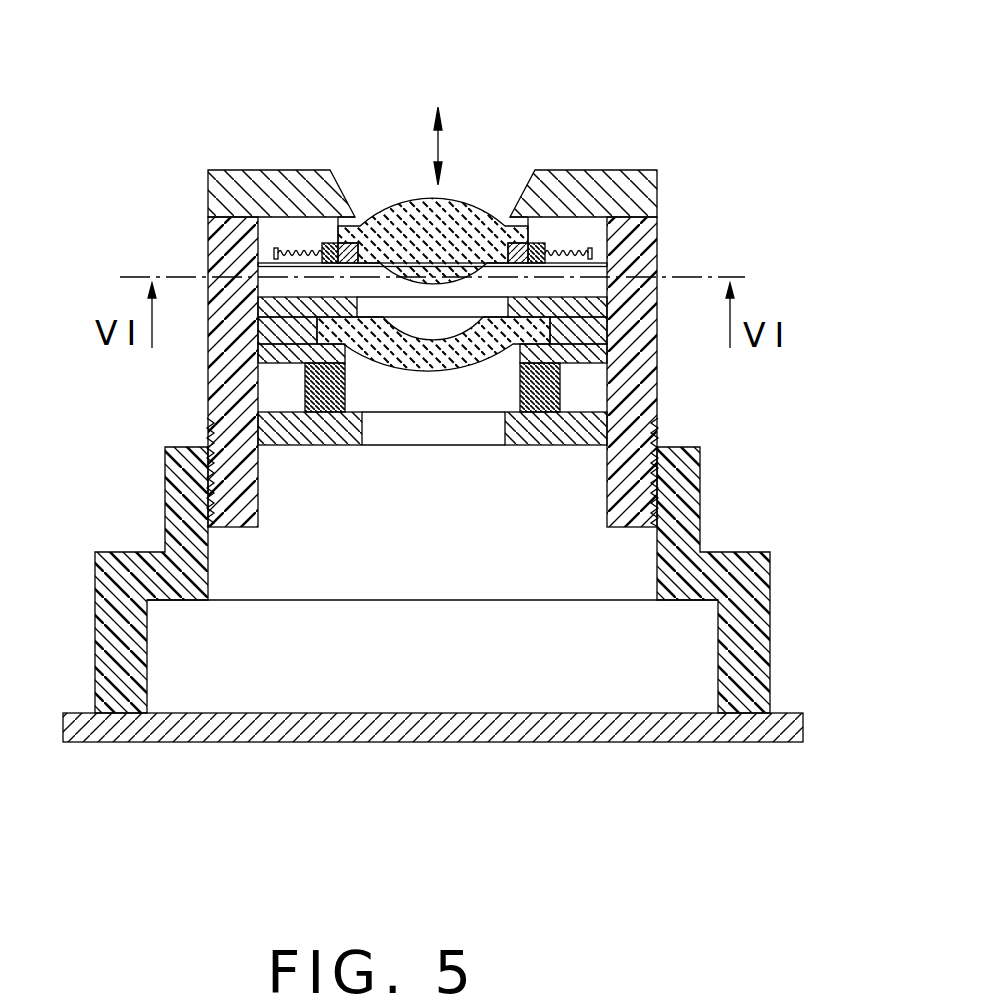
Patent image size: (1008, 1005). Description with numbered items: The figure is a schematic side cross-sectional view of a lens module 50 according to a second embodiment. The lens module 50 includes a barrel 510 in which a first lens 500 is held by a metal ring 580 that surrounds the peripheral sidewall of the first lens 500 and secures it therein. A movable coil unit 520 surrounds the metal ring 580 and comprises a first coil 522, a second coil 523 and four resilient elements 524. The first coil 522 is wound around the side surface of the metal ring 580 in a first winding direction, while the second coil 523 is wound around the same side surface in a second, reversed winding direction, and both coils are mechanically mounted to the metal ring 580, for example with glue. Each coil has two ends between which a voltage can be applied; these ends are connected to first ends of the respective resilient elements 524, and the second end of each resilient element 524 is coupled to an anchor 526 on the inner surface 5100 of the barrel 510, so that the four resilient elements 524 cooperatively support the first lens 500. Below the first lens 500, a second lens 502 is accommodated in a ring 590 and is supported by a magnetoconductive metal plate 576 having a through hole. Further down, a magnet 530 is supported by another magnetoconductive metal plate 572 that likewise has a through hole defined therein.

The lens module 50 is at (451, 47).
The first lens 500 is at (452, 218).
The second lens 502 is at (433, 355).
The barrel 510 is at (237, 265).
The movable coil unit 520 is at (762, 102).
The first coil 522 is at (540, 243).
The second coil 523 is at (530, 243).
The resilient element 524 is at (590, 253).
The anchor 526 is at (570, 267).
The inner surface 5100 is at (660, 262).
The magnet 530 is at (305, 395).
The magnetoconductive metal plate 572 is at (600, 425).
The magnetoconductive metal plate 576 is at (257, 352).
The metal ring 580 is at (339, 243).
The ring 590 is at (600, 323).